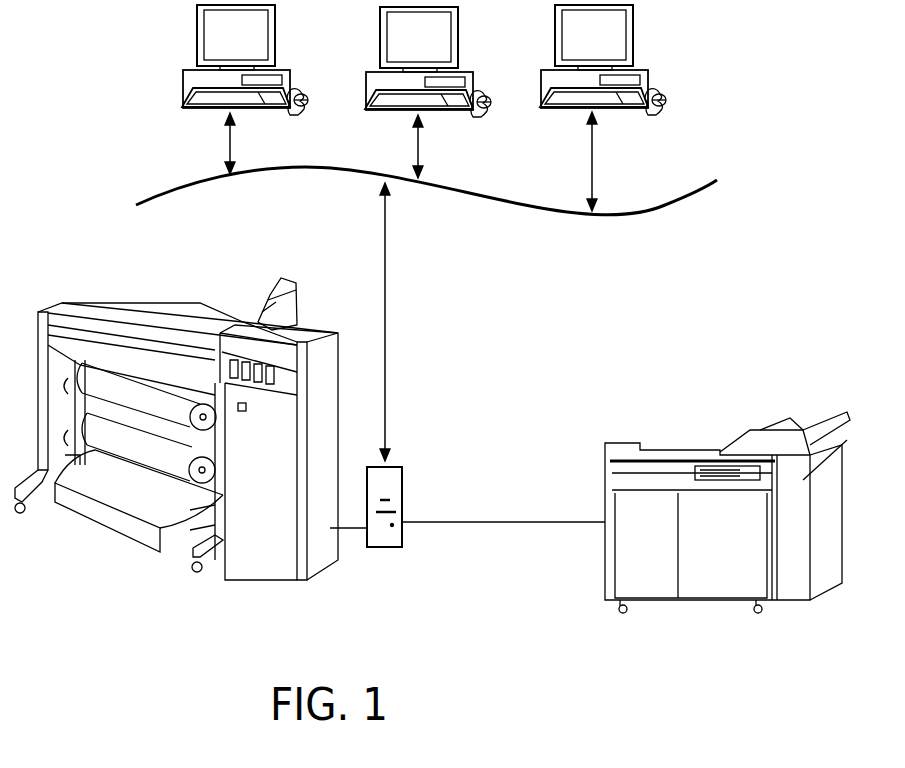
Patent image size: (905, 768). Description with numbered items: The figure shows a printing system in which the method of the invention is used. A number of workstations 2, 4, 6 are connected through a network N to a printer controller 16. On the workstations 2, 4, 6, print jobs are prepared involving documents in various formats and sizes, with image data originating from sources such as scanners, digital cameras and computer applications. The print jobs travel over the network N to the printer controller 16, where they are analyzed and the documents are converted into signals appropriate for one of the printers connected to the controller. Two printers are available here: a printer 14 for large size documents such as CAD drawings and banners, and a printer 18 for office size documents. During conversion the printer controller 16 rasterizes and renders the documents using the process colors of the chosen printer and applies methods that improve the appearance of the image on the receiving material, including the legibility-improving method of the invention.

The workstation 2 is at (287, 52).
The workstation 4 is at (468, 56).
The workstation 6 is at (641, 55).
The network N is at (688, 200).
The printer 14 is at (323, 360).
The printer controller 16 is at (390, 548).
The printer 18 is at (622, 442).